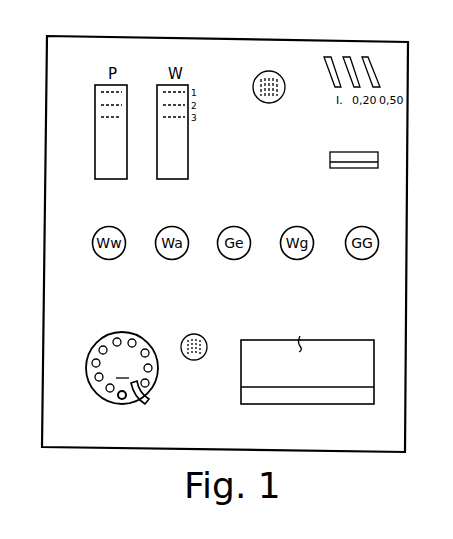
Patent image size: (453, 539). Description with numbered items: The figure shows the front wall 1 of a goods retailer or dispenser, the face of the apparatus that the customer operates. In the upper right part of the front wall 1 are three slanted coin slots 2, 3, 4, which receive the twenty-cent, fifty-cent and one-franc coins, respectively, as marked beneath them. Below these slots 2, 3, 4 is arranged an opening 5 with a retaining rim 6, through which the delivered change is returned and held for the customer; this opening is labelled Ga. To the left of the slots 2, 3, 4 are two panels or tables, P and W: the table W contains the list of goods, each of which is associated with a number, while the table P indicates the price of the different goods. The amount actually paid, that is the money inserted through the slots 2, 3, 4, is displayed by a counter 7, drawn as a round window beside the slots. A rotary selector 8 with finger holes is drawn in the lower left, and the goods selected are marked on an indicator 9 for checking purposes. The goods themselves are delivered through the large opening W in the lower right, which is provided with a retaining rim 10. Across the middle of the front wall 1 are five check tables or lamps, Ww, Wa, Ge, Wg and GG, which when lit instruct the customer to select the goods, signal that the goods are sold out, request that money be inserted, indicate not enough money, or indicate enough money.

The front wall 1 is at (52, 412).
The slot 2 is at (328, 56).
The slot 3 is at (347, 56).
The slot 4 is at (366, 56).
The opening 5 is at (372, 157).
The retaining rim 6 is at (358, 166).
The counter 7 is at (270, 103).
The rotary dial 8 is at (122, 368).
The indicator 9 is at (194, 360).
The retaining rim 10 is at (298, 396).